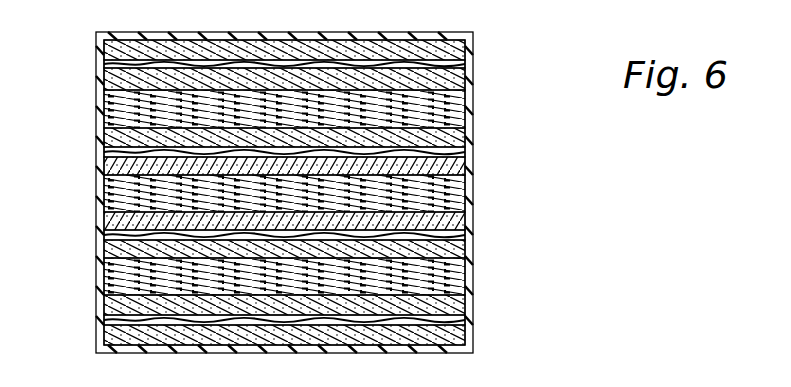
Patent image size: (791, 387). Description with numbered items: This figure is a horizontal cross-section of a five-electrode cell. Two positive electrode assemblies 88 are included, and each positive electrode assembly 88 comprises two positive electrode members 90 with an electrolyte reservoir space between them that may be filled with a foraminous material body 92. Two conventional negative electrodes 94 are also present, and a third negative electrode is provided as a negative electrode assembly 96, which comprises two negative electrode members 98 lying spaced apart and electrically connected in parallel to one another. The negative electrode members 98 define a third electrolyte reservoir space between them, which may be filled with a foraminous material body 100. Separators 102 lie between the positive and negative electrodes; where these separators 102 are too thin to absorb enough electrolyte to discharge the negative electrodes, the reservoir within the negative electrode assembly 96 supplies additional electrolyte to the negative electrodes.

The positive electrode assembly 88 is at (486, 82).
The positive electrode member 90 is at (100, 72).
The foraminous material body 92 is at (102, 97).
The negative electrode 94 is at (95, 37).
The negative electrode assembly 96 is at (486, 163).
The negative electrode member 98 is at (100, 165).
The foraminous material body 100 is at (100, 195).
The separator 102 is at (100, 63).